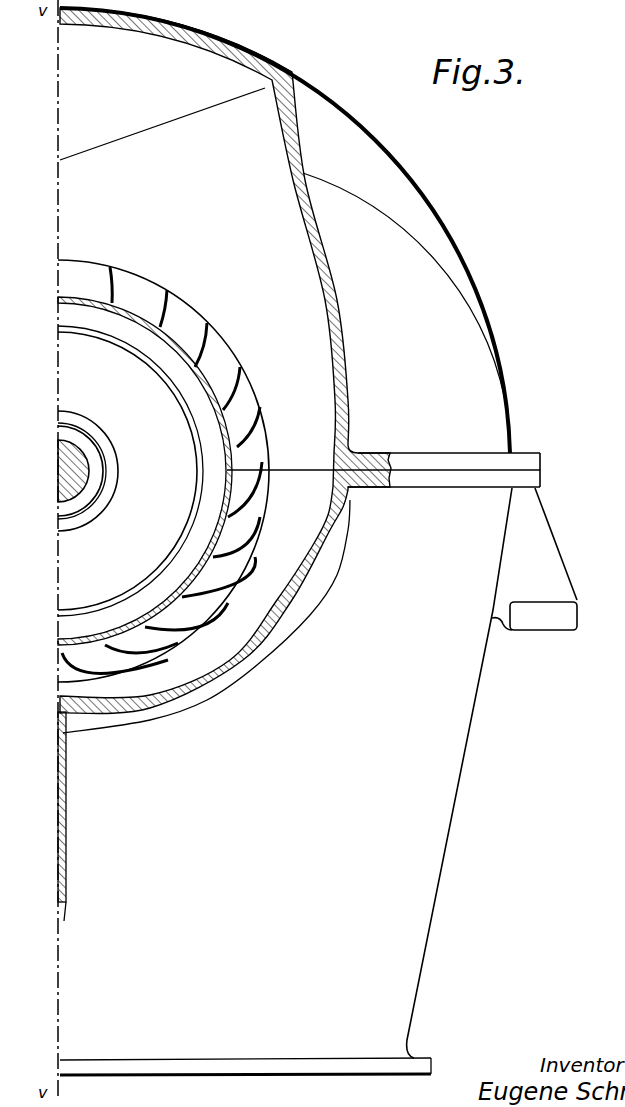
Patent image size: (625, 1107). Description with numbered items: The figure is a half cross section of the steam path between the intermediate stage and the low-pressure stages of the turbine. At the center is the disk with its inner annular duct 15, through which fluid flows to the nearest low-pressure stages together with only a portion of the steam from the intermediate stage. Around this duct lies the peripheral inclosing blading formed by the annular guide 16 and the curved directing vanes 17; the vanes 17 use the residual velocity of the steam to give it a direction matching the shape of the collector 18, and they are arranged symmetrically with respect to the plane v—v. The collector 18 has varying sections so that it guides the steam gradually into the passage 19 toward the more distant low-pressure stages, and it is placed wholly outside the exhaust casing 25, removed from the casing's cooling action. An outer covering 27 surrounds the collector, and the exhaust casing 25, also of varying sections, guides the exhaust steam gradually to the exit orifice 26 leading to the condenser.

The inner annular duct 15 is at (197, 407).
The annular guide 16 is at (180, 350).
The directing vanes 17 is at (210, 347).
The collector 18 is at (313, 242).
The passage 19 is at (132, 22).
The exhaust casing 25 is at (432, 820).
The exit orifice 26 is at (224, 1063).
The outer covering 27 is at (388, 152).